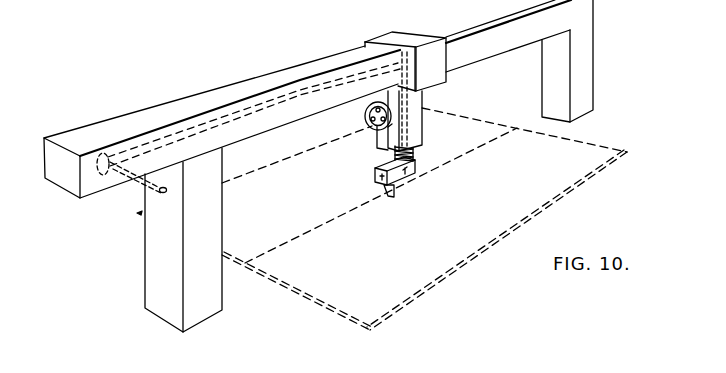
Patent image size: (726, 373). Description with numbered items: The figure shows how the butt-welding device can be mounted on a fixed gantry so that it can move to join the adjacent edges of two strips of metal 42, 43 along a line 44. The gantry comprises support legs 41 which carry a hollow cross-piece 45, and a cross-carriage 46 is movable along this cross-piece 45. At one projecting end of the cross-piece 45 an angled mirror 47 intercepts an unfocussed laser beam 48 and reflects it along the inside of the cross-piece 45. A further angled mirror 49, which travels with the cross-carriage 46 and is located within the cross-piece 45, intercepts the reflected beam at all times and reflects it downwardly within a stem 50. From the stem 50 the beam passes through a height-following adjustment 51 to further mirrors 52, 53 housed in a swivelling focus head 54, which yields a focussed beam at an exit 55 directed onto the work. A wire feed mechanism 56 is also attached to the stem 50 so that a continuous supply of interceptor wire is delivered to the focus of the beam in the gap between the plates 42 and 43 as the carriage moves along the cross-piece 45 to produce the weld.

The support legs 41 is at (216, 295).
The strip of metal 42 is at (478, 120).
The strip of metal 43 is at (590, 141).
The line 44 is at (351, 214).
The hollow cross-piece 45 is at (240, 90).
The cross-carriage 46 is at (382, 40).
The angled mirror 47 is at (105, 178).
The unfocussed laser beam 48 is at (155, 193).
The further angled mirror 49 is at (423, 21).
The stem 50 is at (420, 106).
The height-following adjustment 51 is at (414, 153).
The mirror 52 is at (413, 179).
The mirror 53 is at (375, 175).
The swivelling focus head 54 is at (400, 176).
The exit 55 is at (392, 199).
The wire feed mechanism 56 is at (380, 138).